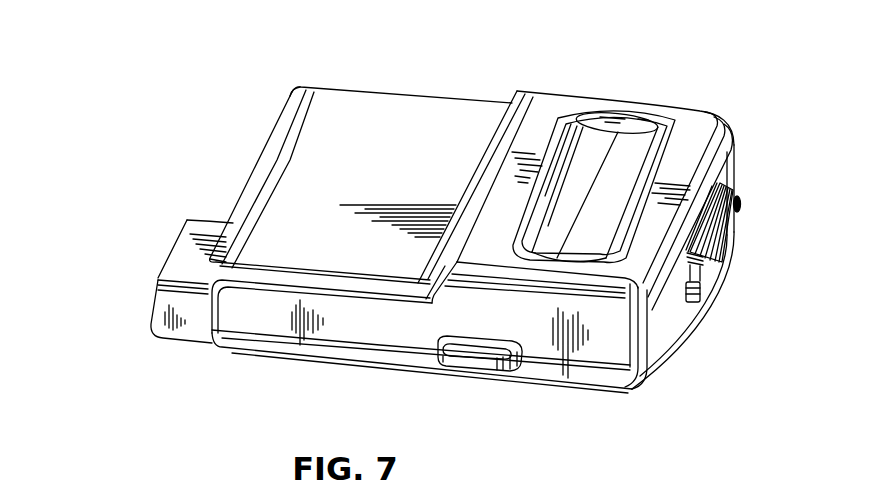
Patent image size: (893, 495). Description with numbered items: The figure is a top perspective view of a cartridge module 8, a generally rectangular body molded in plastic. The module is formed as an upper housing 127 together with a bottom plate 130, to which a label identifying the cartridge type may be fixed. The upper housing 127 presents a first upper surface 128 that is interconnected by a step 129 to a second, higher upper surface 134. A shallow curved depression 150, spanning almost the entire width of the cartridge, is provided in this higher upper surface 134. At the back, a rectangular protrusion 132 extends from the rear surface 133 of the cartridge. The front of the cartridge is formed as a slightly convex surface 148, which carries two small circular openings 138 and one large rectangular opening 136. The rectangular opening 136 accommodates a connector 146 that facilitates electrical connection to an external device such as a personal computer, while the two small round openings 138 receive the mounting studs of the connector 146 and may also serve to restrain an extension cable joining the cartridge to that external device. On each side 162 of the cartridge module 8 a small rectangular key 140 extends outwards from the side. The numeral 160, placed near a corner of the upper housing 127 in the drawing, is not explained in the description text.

The cartridge module 8 is at (466, 64).
The upper housing 127 is at (367, 87).
The first upper surface 128 is at (327, 103).
The step 129 is at (514, 95).
The bottom plate 130 is at (258, 343).
The rectangular protrusion 132 is at (177, 255).
The rear surface 133 is at (250, 175).
The second upper surface 134 is at (548, 112).
The rectangular opening 136 is at (737, 163).
The circular openings 138 is at (740, 195).
The rectangular key 140 is at (463, 365).
The connector 146 is at (733, 237).
The convex surface 148 is at (663, 323).
The curved depression 150 is at (640, 145).
The rounded corner 160 is at (297, 87).
The side 162 is at (353, 313).